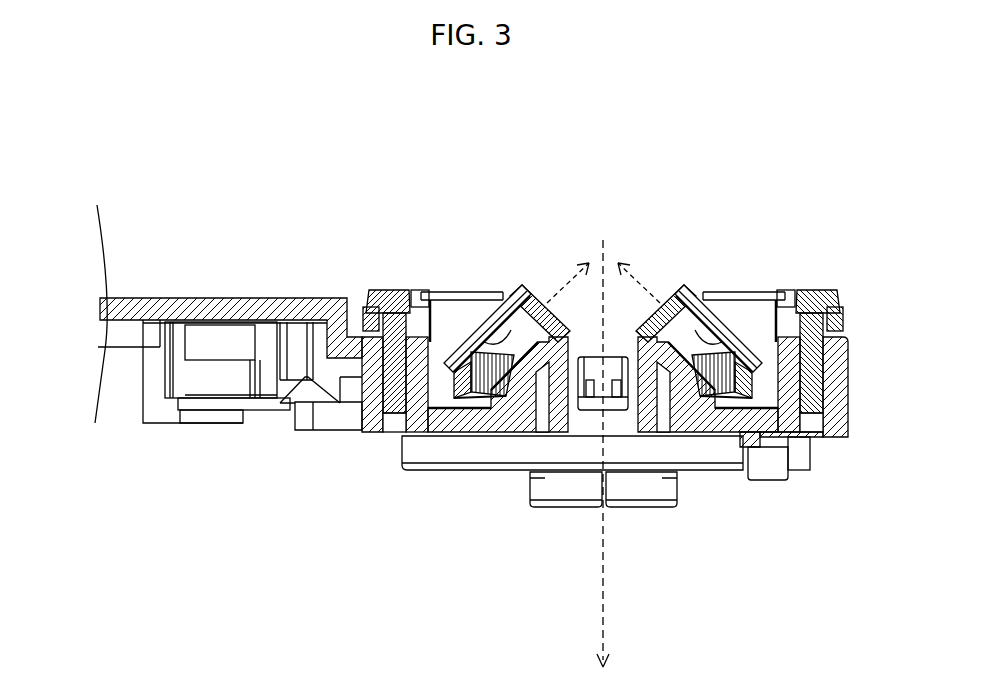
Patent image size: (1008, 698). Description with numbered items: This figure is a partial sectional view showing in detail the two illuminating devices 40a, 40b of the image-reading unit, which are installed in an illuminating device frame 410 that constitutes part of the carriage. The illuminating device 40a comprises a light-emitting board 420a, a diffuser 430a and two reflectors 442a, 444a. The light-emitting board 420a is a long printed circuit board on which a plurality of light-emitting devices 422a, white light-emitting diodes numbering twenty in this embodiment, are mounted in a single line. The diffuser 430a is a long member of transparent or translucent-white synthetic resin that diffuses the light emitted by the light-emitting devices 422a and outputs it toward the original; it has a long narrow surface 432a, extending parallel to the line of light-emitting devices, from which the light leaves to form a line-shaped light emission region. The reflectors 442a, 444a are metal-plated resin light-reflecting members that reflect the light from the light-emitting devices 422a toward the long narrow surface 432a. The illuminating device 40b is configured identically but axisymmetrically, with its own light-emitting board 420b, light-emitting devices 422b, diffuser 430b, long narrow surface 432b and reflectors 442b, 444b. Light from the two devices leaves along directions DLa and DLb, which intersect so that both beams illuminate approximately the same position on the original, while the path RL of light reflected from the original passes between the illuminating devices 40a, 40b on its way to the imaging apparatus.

The illuminating device 40a is at (754, 185).
The illuminating device 40b is at (425, 185).
The illuminating device frame 410 is at (243, 298).
The light-emitting board 420a is at (727, 437).
The light-emitting board 420b is at (478, 433).
The light-emitting devices 422a is at (830, 283).
The light-emitting devices 422b is at (384, 283).
The diffuser 430a is at (690, 290).
The diffuser 430b is at (516, 290).
The long narrow surface 432a is at (667, 282).
The long narrow surface 432b is at (540, 282).
The reflector 442a is at (736, 296).
The reflector 442b is at (470, 296).
The reflector 444a is at (755, 296).
The reflector 444b is at (452, 296).
The direction of light DLa is at (637, 268).
The direction of light DLb is at (570, 268).
The path of reflected light RL is at (605, 627).